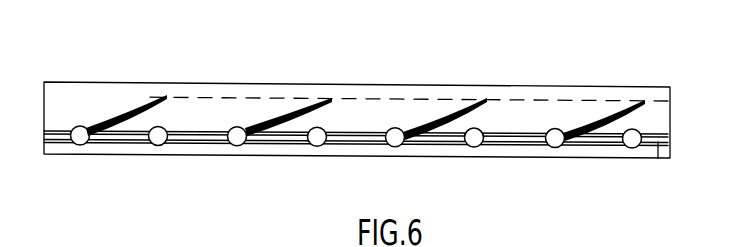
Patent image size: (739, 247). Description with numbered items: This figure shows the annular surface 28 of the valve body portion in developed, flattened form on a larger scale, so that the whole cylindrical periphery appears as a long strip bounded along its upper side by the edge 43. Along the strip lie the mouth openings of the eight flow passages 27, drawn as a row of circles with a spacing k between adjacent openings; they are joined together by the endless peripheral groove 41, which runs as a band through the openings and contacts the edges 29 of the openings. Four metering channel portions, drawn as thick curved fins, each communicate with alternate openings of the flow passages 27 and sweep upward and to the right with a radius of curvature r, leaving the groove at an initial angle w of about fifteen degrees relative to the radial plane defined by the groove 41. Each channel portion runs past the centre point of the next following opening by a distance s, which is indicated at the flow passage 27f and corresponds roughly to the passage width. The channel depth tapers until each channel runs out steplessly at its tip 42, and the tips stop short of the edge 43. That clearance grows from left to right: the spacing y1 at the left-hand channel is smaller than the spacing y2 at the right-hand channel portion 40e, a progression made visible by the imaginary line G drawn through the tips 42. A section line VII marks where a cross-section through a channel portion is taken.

The flow passage 27 is at (241, 146).
The flow passage 27f is at (309, 141).
The annular surface 28 is at (297, 90).
The edge of the opening 29 is at (79, 146).
The right-hand channel portion 40e is at (569, 132).
The peripheral groove 41 is at (658, 158).
The tip 42 is at (487, 100).
The edge of the annular surface 43 is at (228, 83).
The imaginary line G is at (420, 98).
The radius of curvature r is at (86, 66).
The spacing y1 is at (149, 118).
The spacing y2 is at (670, 135).
The initial angle w is at (173, 165).
The distance s is at (332, 101).
The spacing k is at (474, 129).
The section line VII is at (433, 177).